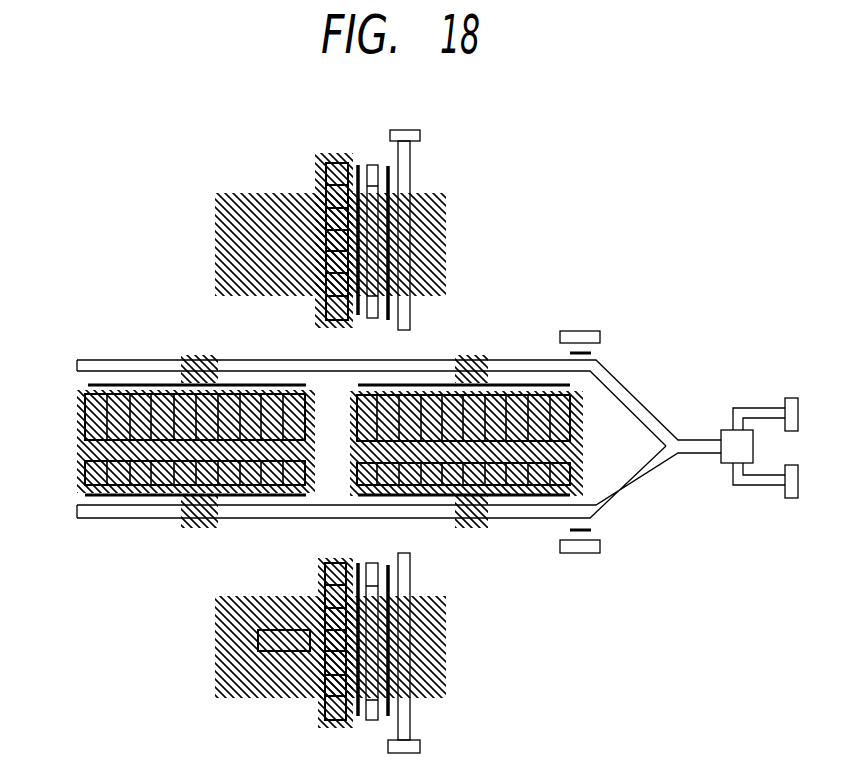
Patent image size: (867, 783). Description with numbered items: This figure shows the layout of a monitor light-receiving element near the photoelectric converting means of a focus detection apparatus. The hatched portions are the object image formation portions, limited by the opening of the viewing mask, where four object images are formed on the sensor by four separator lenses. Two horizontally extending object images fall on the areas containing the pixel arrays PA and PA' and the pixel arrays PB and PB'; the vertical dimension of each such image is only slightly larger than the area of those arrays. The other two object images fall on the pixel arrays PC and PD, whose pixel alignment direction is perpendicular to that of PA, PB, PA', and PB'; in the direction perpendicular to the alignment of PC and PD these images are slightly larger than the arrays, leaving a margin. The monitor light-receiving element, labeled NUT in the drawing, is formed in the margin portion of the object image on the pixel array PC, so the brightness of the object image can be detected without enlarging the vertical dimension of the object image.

The pixel array PA is at (195, 521).
The pixel array PA' is at (196, 399).
The pixel array PB is at (463, 521).
The pixel array PB' is at (466, 400).
The pixel array PC is at (317, 698).
The pixel array PD is at (316, 213).
The nut NUT is at (250, 627).